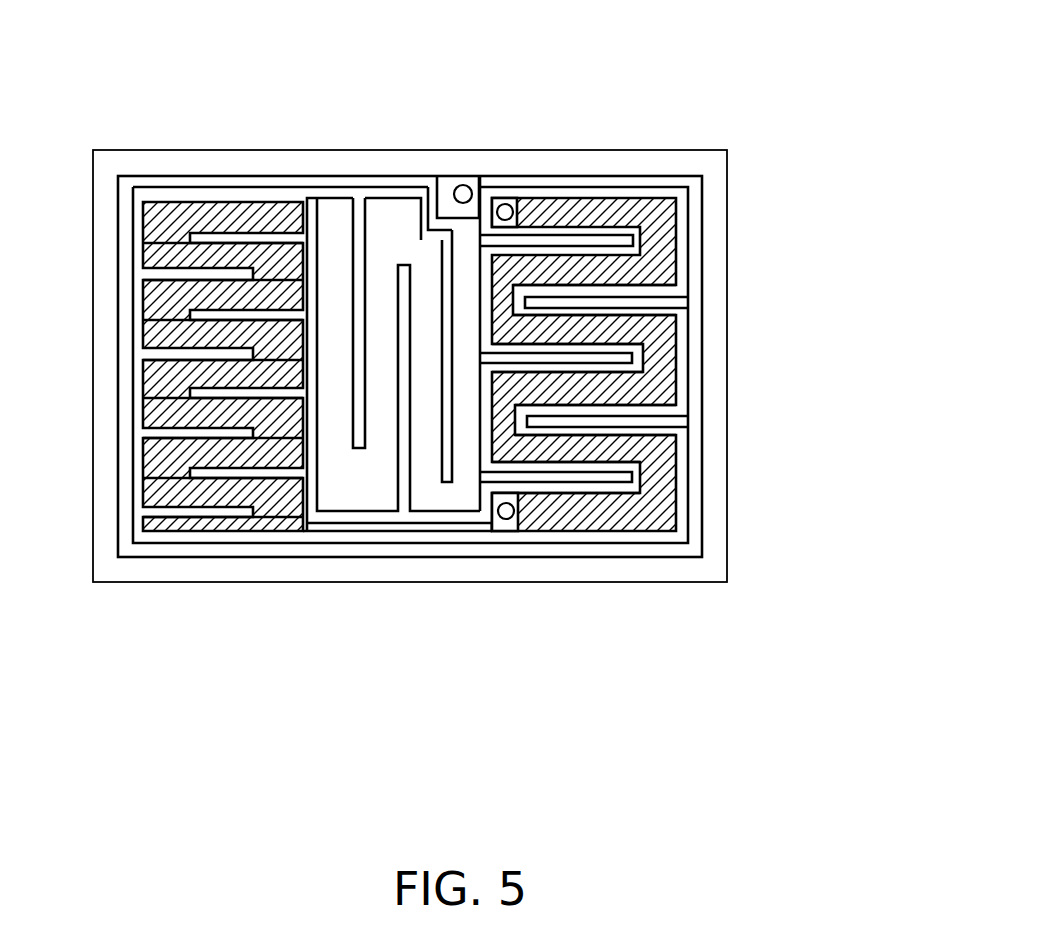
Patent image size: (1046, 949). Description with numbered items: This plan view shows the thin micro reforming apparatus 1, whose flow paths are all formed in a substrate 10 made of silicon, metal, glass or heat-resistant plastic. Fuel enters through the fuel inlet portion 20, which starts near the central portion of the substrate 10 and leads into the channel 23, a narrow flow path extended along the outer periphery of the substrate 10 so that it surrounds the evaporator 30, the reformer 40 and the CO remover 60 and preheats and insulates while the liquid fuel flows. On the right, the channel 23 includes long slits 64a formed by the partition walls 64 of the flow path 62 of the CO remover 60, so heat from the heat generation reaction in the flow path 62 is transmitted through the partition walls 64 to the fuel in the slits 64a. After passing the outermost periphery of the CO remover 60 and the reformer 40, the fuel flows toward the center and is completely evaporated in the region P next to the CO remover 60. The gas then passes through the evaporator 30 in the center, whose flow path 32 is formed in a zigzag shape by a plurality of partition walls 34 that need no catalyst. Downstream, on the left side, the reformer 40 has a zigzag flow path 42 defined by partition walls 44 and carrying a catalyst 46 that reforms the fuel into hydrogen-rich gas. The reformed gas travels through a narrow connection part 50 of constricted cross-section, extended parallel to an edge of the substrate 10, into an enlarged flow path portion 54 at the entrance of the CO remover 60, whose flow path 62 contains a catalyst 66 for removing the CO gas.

The thin micro reforming apparatus 1 is at (765, 130).
The substrate 10 is at (712, 268).
The fuel inlet portion 20 is at (425, 165).
The channel 23 is at (125, 210).
The evaporator 30 is at (441, 378).
The flow path of the evaporator 32 is at (427, 385).
The partition walls of the evaporator 34 is at (442, 482).
The region next to the flow path of the CO remover P is at (470, 290).
The reformer 40 is at (175, 371).
The flow path of the reformer 42 is at (168, 223).
The partition walls of the reformer 44 is at (257, 317).
The catalyst of the reformer 46 is at (189, 305).
The connection part 50 is at (465, 522).
The enlarged flow path portion 54 is at (506, 530).
The CO remover 60 is at (672, 357).
The flow path of the CO remover 62 is at (618, 265).
The partition walls of the CO remover 64 is at (640, 487).
The long slits 64a is at (610, 417).
The catalyst of the CO remover 66 is at (600, 300).